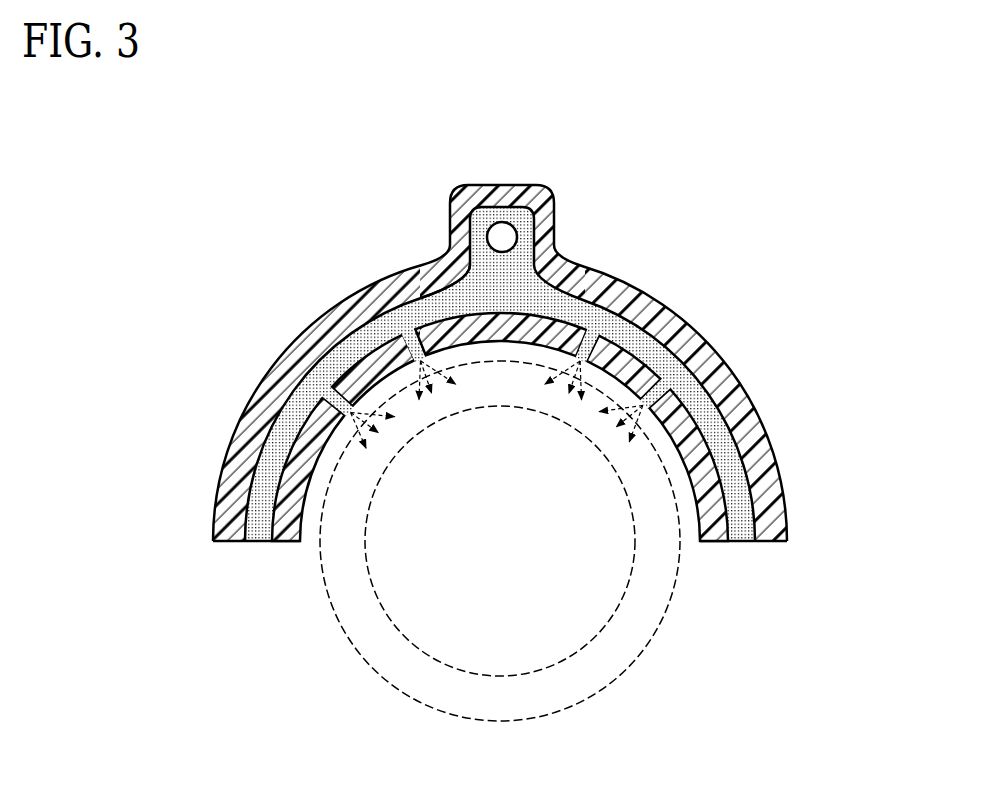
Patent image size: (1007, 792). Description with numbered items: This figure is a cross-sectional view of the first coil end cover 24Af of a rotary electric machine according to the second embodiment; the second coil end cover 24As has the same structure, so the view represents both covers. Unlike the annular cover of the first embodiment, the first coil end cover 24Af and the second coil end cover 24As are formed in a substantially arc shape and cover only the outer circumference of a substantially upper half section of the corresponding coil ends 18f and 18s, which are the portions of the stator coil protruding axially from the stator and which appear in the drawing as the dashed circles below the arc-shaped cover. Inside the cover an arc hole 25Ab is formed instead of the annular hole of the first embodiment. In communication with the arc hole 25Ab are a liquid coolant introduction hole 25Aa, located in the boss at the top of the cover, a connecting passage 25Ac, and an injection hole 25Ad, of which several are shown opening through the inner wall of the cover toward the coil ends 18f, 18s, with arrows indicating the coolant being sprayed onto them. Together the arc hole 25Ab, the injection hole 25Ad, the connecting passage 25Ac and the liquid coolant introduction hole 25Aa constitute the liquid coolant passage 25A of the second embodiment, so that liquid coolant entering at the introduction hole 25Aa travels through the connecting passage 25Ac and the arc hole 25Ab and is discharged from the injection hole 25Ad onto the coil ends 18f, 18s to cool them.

The first coil end cover 24Af is at (529, 347).
The second coil end cover 24As is at (665, 233).
The liquid coolant passage 25A is at (653, 337).
The liquid coolant introduction hole 25Aa is at (497, 230).
The arc hole 25Ab is at (714, 407).
The connecting passage 25Ac is at (467, 266).
The injection hole 25Ad is at (333, 410).
The coil end 18f is at (601, 541).
The coil end 18s is at (675, 583).